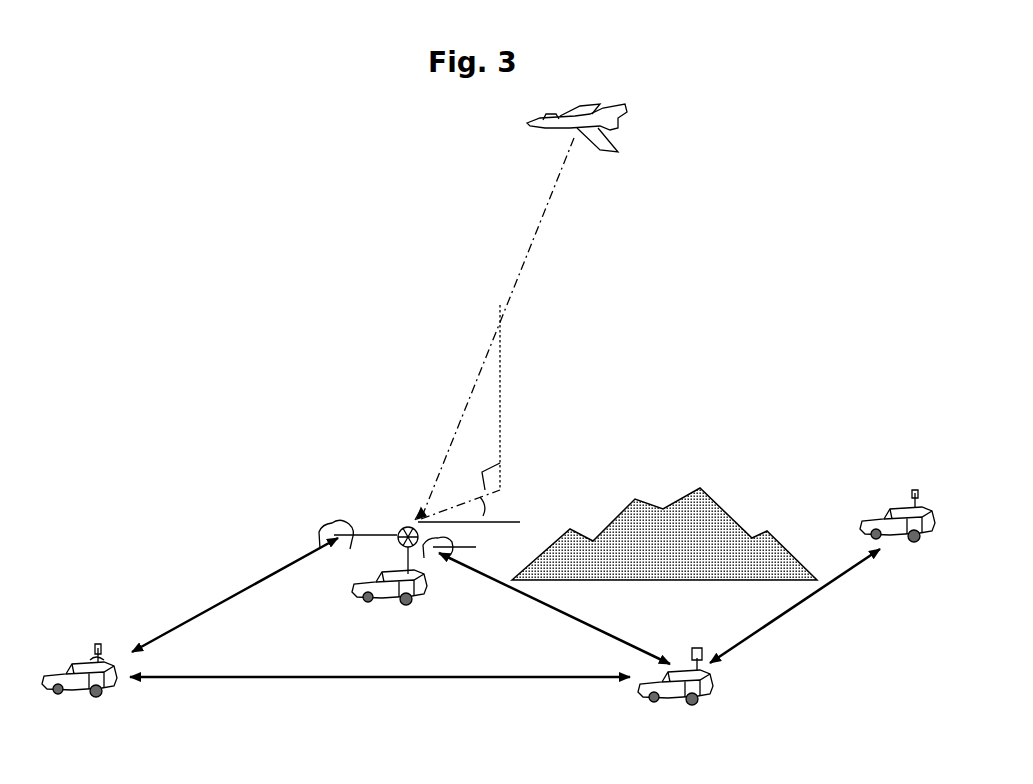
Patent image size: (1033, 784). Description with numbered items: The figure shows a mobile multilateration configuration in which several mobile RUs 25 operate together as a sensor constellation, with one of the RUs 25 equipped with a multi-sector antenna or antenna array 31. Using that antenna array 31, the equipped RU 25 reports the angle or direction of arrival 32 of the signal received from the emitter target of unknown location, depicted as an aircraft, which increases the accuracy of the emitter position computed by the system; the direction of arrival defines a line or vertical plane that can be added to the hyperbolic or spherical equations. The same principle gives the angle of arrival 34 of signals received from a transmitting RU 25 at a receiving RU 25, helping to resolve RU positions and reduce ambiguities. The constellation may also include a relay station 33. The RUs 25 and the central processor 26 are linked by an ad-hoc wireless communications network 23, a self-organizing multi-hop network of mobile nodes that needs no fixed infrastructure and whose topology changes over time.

The ad-hoc wireless communications network 23 is at (505, 628).
The mobile RU 25 is at (488, 615).
The central processor 26 is at (72, 656).
The multi-sector antenna or antenna array 31 is at (389, 566).
The angle of arrival or direction of arrival 32 is at (501, 512).
The relay station 33 is at (675, 689).
The angle of arrival 34 is at (405, 535).